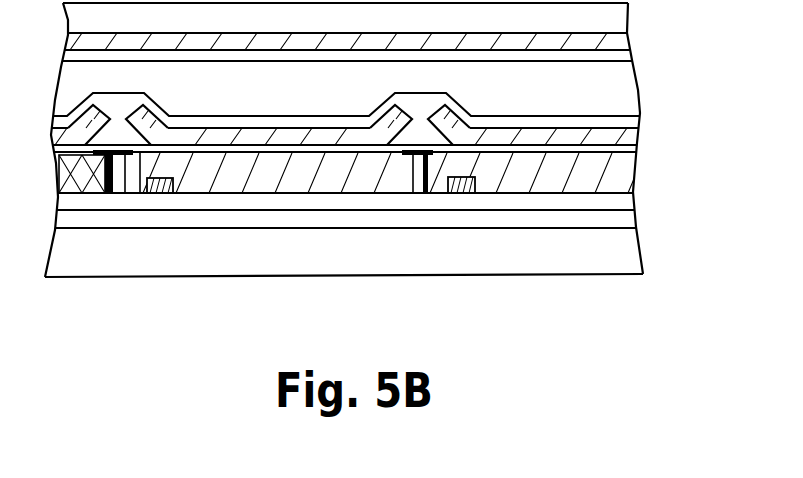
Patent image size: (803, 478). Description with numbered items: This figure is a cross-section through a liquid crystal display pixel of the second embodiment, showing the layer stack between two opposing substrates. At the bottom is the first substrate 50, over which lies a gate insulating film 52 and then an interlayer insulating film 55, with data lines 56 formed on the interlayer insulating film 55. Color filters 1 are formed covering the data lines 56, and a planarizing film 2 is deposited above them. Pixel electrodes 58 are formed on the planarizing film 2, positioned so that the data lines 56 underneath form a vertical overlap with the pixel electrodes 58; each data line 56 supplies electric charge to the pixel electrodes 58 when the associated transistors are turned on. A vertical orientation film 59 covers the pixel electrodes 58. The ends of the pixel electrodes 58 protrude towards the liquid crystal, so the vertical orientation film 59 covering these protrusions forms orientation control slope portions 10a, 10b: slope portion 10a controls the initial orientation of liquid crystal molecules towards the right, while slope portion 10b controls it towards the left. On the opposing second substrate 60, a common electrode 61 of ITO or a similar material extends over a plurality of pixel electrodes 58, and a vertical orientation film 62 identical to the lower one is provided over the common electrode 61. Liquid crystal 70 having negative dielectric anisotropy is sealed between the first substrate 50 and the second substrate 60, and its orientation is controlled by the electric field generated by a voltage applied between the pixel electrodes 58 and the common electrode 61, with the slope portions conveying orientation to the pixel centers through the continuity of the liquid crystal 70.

The second substrate 60 is at (618, 18).
The common electrode 61 is at (618, 38).
The vertical orientation film 62 is at (618, 55).
The liquid crystal 70 is at (618, 90).
The vertical orientation film 59 is at (640, 117).
The pixel electrode 58 is at (632, 142).
The orientation control slope portion 10a is at (150, 104).
The orientation control slope portion 10b is at (390, 106).
The planarizing film 2 is at (632, 148).
The color filter 1 is at (620, 173).
The data line 56 is at (458, 193).
The interlayer insulating film 55 is at (623, 198).
The gate insulating film 52 is at (623, 217).
The first substrate 50 is at (623, 253).